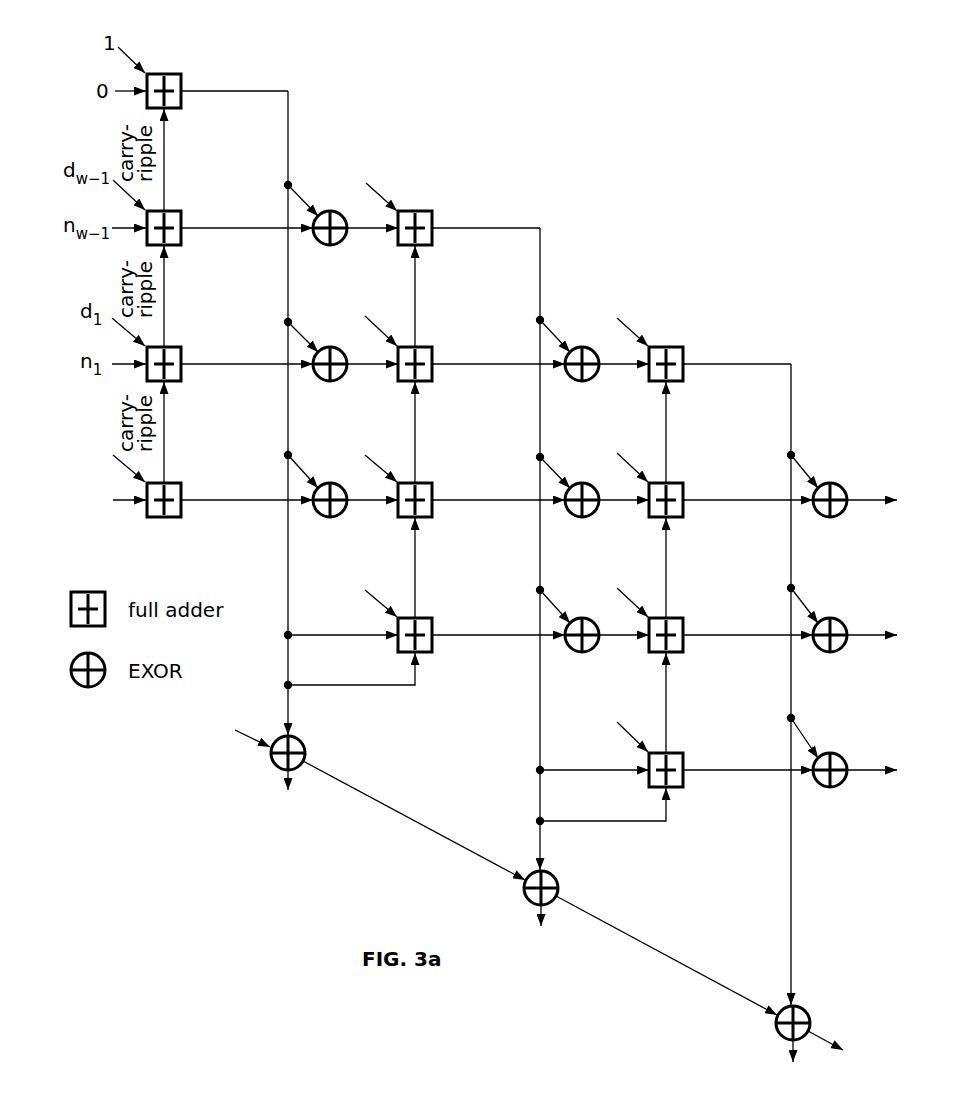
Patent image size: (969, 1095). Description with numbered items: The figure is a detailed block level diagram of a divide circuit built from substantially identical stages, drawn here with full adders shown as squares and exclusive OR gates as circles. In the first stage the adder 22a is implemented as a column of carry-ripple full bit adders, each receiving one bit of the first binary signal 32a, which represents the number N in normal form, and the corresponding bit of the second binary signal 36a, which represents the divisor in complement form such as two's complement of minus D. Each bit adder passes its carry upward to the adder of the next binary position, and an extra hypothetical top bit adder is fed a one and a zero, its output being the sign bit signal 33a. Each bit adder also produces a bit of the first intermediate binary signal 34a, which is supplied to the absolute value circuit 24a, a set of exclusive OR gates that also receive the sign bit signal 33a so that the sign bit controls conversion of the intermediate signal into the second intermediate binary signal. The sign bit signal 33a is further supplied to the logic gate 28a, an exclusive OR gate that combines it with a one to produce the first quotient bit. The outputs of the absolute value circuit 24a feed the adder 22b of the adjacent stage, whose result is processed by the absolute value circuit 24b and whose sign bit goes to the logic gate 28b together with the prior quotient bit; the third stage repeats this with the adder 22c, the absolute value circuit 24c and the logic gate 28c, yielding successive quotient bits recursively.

The adder 22a is at (164, 60).
The adder 22b is at (416, 180).
The adder 22c is at (660, 306).
The absolute value circuit 24a is at (331, 160).
The absolute value circuit 24b is at (582, 296).
The absolute value circuit 24c is at (828, 430).
The logic gate 28a is at (303, 744).
The logic gate 28b is at (556, 880).
The logic gate 28c is at (808, 1015).
The sign bit signal 33a is at (238, 90).
The first intermediate binary signal 34a is at (193, 227).
The second binary signal 36a is at (86, 457).
The first binary signal 32a is at (87, 501).